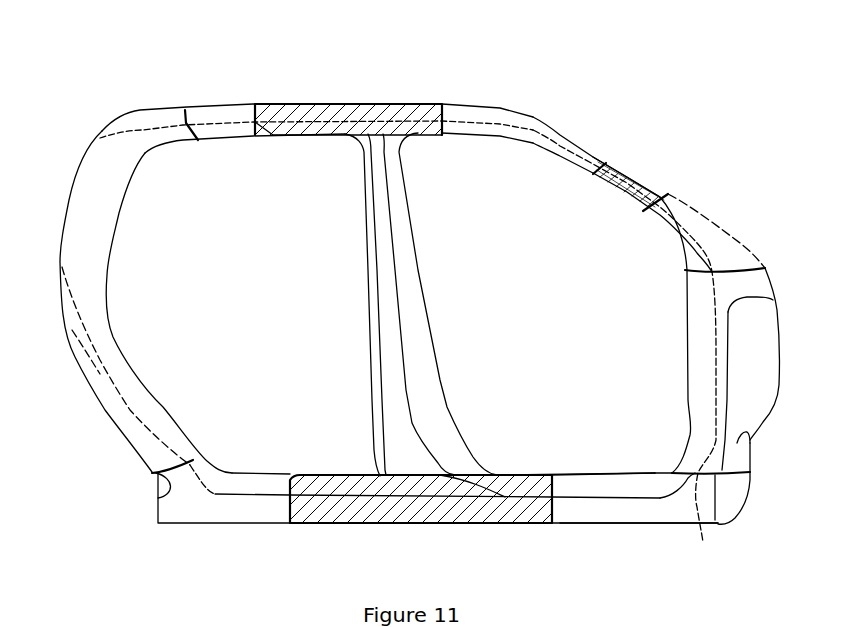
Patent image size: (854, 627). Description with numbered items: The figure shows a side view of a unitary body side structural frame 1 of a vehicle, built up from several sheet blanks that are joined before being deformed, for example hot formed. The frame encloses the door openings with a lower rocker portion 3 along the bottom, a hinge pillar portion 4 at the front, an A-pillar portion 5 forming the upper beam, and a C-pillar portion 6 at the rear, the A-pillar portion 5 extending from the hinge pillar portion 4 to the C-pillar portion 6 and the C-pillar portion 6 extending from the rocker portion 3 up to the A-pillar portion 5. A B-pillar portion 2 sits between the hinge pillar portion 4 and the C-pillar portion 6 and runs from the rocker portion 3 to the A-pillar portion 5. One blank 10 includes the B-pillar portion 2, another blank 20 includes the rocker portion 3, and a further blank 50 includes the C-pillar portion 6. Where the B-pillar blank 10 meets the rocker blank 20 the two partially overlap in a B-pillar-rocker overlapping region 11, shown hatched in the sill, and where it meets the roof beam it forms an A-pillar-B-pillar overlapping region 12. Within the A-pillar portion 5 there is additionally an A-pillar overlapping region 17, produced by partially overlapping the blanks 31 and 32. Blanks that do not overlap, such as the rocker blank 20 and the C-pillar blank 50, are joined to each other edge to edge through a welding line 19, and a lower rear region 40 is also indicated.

The unitary body side structural frame 1 is at (237, 48).
The B-pillar portion 2 is at (432, 214).
The rocker portion 3 is at (283, 530).
The hinge pillar portion 4 is at (783, 344).
The A-pillar portion 5 is at (560, 110).
The C-pillar portion 6 is at (72, 172).
The blank 10 is at (373, 400).
The B-pillar-rocker overlapping region 11 is at (450, 478).
The A-pillar-B-pillar overlapping region 12 is at (400, 103).
The A-pillar overlapping region 17 is at (627, 166).
The welding line 19 is at (158, 493).
The blank 20 is at (634, 521).
The blank 31 is at (686, 206).
The blank 32 is at (596, 157).
The rear pillar lower portion 40 is at (750, 443).
The blank 50 is at (95, 361).